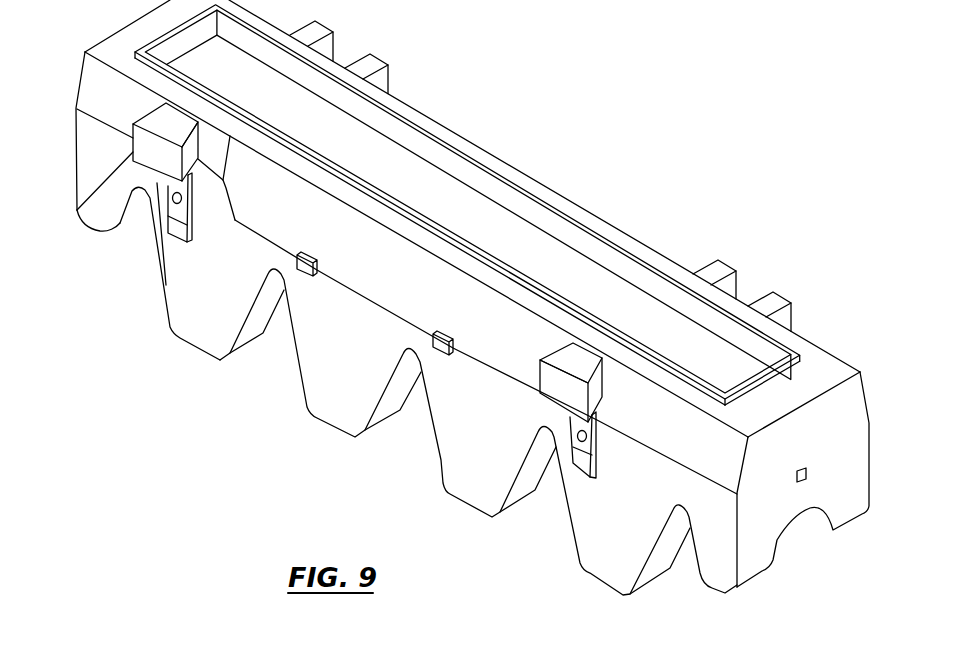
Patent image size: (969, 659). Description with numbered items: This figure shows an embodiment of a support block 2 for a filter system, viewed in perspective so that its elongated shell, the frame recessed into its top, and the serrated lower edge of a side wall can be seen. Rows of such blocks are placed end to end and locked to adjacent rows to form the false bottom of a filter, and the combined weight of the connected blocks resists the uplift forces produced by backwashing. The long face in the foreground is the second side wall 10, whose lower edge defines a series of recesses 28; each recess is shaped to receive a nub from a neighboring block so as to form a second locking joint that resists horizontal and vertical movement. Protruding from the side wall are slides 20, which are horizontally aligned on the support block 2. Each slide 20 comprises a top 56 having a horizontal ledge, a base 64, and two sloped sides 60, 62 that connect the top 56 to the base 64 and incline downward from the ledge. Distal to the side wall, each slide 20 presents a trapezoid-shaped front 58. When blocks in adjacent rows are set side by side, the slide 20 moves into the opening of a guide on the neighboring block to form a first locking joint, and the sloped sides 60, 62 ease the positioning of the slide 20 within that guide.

The support block 2 is at (572, 150).
The second side wall 10 is at (328, 410).
The slide 20 is at (77, 211).
The recess 28 is at (165, 283).
The top 56 is at (178, 117).
The trapezoid-shaped front 58 is at (153, 163).
The sloped side 60 is at (200, 142).
The sloped side 62 is at (563, 343).
The base 64 is at (158, 184).